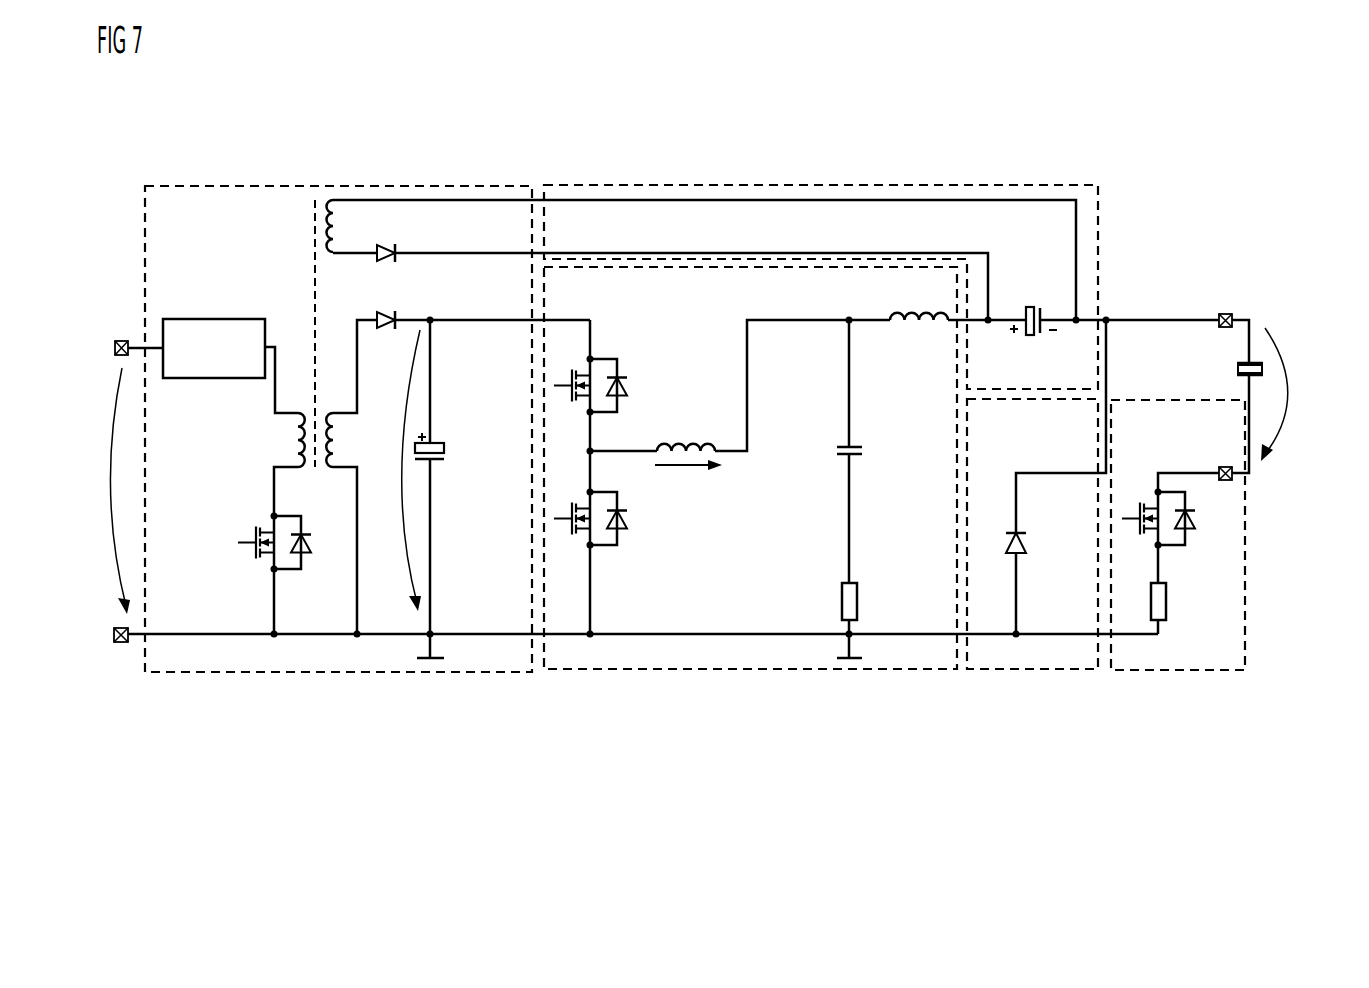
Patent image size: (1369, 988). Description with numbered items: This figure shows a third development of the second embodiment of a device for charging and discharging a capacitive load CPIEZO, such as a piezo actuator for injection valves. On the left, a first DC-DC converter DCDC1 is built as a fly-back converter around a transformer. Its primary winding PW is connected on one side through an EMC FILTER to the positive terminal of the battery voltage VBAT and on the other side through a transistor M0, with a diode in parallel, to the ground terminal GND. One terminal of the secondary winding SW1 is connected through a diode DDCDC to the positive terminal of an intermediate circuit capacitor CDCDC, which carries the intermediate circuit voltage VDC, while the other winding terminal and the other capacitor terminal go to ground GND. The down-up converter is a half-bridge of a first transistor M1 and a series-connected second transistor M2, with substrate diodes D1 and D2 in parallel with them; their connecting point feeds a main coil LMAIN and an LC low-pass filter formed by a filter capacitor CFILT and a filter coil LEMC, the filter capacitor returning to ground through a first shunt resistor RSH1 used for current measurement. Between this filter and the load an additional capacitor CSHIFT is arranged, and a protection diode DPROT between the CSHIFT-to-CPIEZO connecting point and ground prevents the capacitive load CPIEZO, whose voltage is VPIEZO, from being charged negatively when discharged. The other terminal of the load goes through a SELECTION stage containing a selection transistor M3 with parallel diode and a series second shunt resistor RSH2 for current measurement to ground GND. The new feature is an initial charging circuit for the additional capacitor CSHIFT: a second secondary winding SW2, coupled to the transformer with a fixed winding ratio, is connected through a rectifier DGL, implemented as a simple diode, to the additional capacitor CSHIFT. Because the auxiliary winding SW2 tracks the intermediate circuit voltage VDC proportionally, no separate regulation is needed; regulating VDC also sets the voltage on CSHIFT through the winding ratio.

The first DC-DC converter DCDC1 is at (338, 429).
The EMC filter EMC FILTER is at (230, 366).
The battery voltage VBAT is at (91, 491).
The ground terminal GND is at (615, 659).
The primary winding PW is at (279, 358).
The secondary winding SW1 is at (359, 479).
The second secondary winding SW2 is at (703, 262).
The rectifier DGL is at (684, 273).
The diode DDCDC is at (467, 296).
The intermediate circuit capacitor CDCDC is at (466, 489).
The intermediate circuit voltage VDC is at (392, 470).
The transistor M0 is at (292, 575).
The first transistor M1 is at (573, 385).
The diode D1 is at (608, 368).
The second transistor M2 is at (573, 543).
The diode D2 is at (608, 500).
The main coil LMAIN is at (719, 385).
The filter capacitor CFILT is at (886, 450).
The first shunt resistor RSH1 is at (886, 617).
The filter coil LEMC is at (898, 345).
The additional capacitor CSHIFT is at (821, 287).
The protection diode DPROT is at (1036, 494).
The capacitive load CPIEZO is at (1169, 397).
The piezo voltage VPIEZO is at (1314, 394).
The selection stage SELECTION is at (1178, 535).
The selection transistor M3 is at (1180, 528).
The second shunt resistor RSH2 is at (1192, 606).